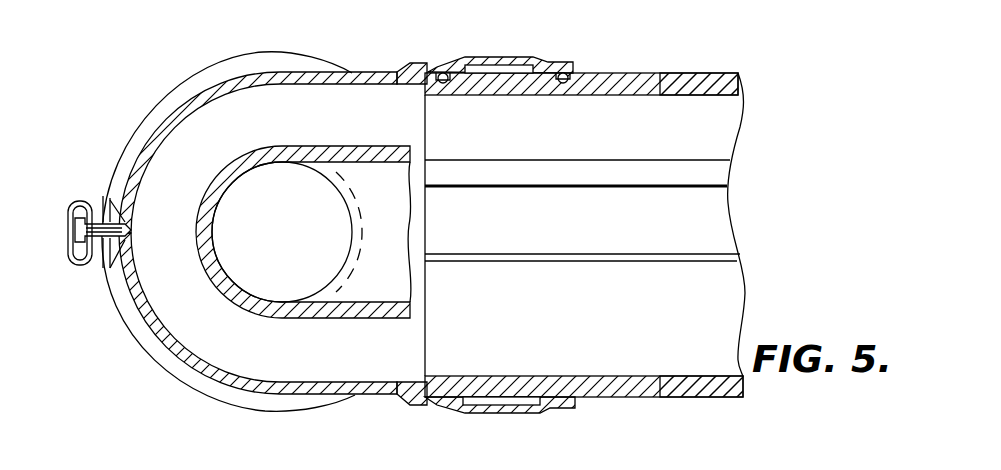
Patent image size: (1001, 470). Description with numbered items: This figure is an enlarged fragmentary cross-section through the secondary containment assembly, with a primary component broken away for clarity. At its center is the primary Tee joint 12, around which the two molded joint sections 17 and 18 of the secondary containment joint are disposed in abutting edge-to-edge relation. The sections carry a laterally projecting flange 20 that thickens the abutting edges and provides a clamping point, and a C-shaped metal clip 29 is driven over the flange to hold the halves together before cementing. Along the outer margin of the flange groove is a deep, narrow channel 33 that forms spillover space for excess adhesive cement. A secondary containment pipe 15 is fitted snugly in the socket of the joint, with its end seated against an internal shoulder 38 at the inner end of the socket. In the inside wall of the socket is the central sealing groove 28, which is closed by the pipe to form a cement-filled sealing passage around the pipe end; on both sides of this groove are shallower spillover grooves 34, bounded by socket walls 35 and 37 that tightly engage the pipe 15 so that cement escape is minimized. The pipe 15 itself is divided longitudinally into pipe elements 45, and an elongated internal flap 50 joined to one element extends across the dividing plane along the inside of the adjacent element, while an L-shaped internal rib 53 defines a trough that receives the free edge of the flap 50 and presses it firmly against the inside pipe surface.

The primary Tee joint 12 is at (258, 147).
The secondary containment pipe 15 is at (664, 72).
The joint section 17 is at (327, 72).
The joint section 18 is at (300, 396).
The laterally projecting flange 20 is at (105, 216).
The sealing groove 28 is at (500, 58).
The metal clip 29 is at (83, 265).
The channel 33 is at (87, 201).
The spillover groove 34 is at (463, 62).
The socket wall 35 is at (573, 76).
The socket wall 37 is at (440, 76).
The internal shoulder 38 is at (427, 64).
The pipe element 45 is at (712, 73).
The internal flap 50 is at (630, 226).
The internal rib 53 is at (588, 173).